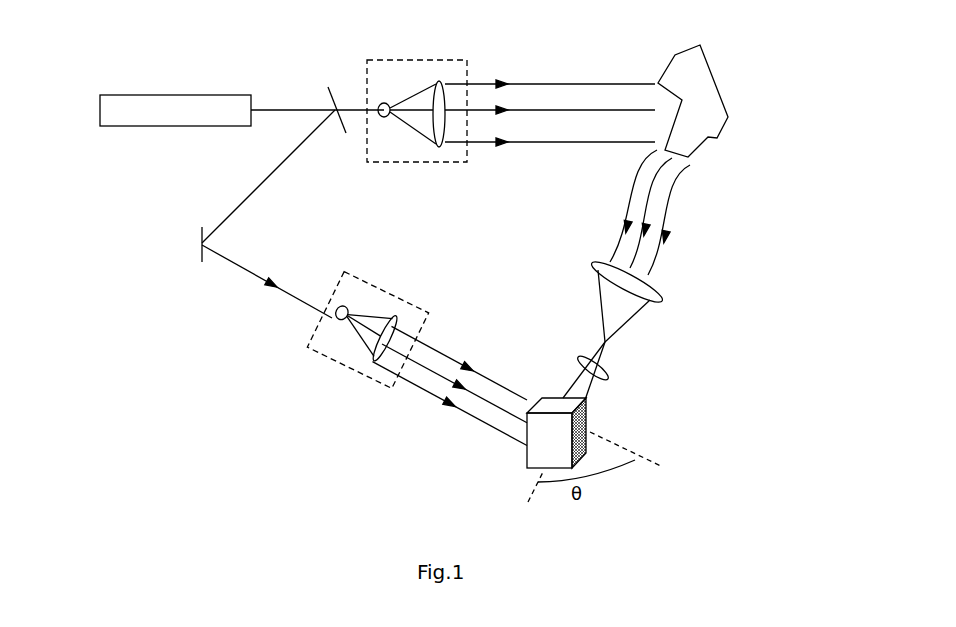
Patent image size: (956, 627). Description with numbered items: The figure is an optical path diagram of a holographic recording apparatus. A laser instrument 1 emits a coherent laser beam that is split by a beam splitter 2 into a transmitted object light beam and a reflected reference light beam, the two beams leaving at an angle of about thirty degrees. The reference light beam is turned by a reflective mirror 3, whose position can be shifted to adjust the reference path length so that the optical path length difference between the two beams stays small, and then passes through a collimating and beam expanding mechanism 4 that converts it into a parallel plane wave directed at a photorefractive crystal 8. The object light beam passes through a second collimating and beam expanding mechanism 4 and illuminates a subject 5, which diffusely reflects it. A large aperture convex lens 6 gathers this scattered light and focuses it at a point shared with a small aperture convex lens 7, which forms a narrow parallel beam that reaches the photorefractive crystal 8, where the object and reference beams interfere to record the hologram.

The laser instrument 1 is at (138, 105).
The beam splitter 2 is at (334, 100).
The reflective mirror 3 is at (201, 241).
The collimating and beam expanding mechanism 4 is at (425, 60).
The subject 5 is at (710, 65).
The large aperture convex lens 6 is at (667, 292).
The small aperture convex lens 7 is at (626, 368).
The photorefractive crystal 8 is at (588, 432).